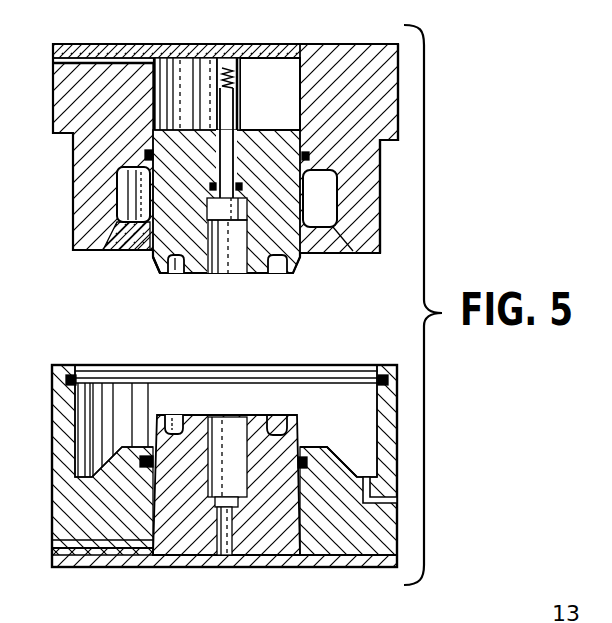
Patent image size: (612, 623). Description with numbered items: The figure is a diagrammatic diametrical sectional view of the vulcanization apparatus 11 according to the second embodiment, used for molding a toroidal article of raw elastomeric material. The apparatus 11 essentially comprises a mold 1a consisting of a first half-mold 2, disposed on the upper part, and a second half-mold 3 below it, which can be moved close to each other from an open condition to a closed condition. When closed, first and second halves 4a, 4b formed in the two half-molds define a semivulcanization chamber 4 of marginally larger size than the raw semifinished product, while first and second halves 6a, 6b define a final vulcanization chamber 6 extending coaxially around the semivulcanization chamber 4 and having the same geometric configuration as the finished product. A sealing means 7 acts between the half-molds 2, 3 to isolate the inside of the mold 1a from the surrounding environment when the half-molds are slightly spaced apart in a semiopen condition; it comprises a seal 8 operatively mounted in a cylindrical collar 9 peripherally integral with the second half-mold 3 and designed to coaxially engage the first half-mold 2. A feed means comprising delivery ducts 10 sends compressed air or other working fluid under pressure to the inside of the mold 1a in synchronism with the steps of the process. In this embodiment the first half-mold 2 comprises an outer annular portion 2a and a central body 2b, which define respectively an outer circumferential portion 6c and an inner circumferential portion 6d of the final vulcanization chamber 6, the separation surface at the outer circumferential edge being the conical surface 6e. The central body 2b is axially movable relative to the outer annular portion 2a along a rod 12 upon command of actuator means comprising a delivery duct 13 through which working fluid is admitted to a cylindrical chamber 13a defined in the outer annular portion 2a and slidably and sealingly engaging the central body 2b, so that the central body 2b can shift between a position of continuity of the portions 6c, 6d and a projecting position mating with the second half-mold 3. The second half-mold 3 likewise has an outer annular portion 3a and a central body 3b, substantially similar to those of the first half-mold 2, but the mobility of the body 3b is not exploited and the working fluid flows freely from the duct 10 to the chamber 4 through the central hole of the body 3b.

The mold 1a is at (386, 215).
The first half-mold 2 is at (301, 42).
The outer annular portion 2a is at (363, 54).
The central body 2b is at (253, 146).
The second half-mold 3 is at (322, 572).
The outer annular portion 3a is at (347, 556).
The central body 3b is at (257, 542).
The semivulcanization chamber 4 is at (278, 267).
The first half of semivulcanization chamber 4a is at (180, 268).
The second half of semivulcanization chamber 4b is at (171, 423).
The final vulcanization chamber 6 is at (315, 213).
The first half of final vulcanization chamber 6a is at (138, 154).
The second half of final vulcanization chamber 6b is at (309, 447).
The outer circumferential portion 6c is at (122, 192).
The inner circumferential portion 6d is at (153, 258).
The conical surface 6e is at (124, 251).
The sealing means 7 is at (77, 363).
The seal 8 is at (65, 380).
The cylindrical collar 9 is at (62, 418).
The delivery duct 10 is at (100, 546).
The vulcanization apparatus 11 is at (50, 592).
The rod 12 is at (233, 103).
The delivery duct 13 is at (101, 58).
The cylindrical chamber 13a is at (197, 54).